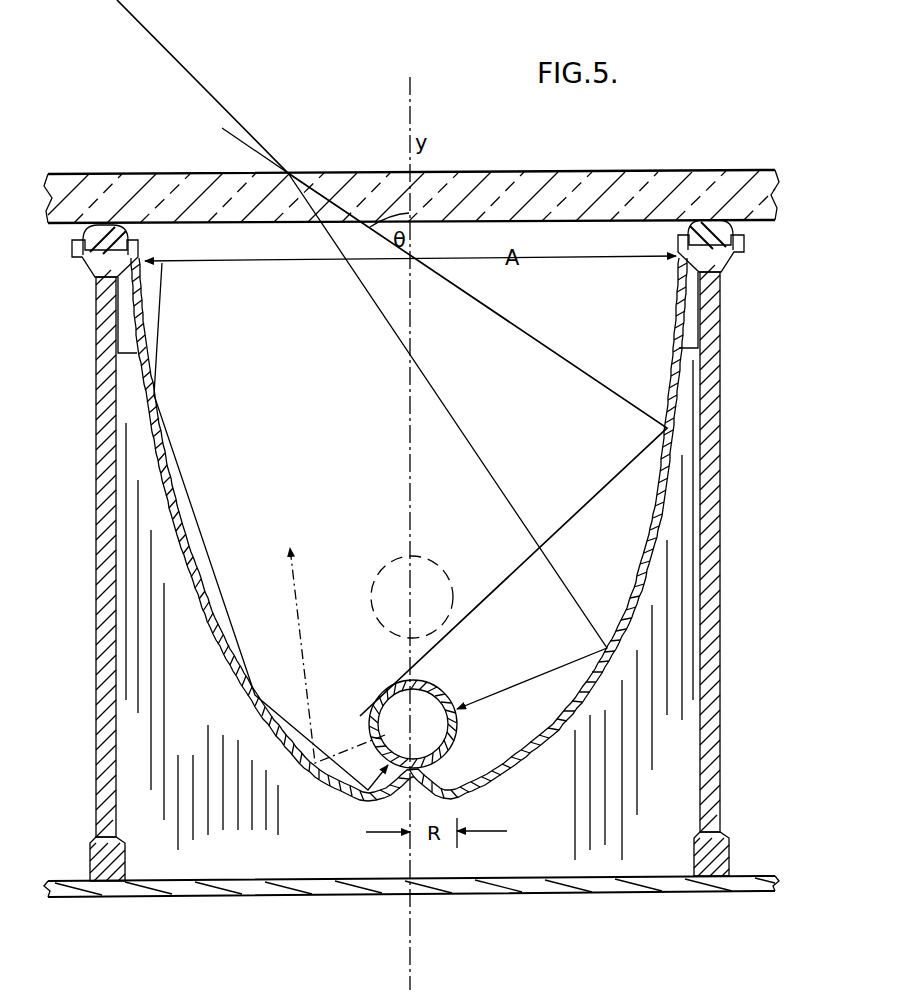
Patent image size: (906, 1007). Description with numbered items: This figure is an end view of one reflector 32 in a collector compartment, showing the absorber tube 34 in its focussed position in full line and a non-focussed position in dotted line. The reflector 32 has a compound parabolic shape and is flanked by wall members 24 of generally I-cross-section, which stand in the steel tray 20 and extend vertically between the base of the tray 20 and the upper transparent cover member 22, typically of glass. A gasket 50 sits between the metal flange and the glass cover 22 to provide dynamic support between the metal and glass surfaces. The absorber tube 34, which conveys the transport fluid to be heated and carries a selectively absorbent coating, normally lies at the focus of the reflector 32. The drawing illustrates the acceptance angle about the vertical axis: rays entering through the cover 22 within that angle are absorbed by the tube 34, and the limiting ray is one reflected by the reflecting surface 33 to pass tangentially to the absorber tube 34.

The tray 20 is at (565, 880).
The transparent cover member 22 is at (130, 186).
The wall members 24 is at (103, 524).
The reflector 32 is at (234, 684).
The reflecting surface 33 is at (173, 515).
The absorber tube 34 is at (457, 716).
The gasket 50 is at (97, 237).